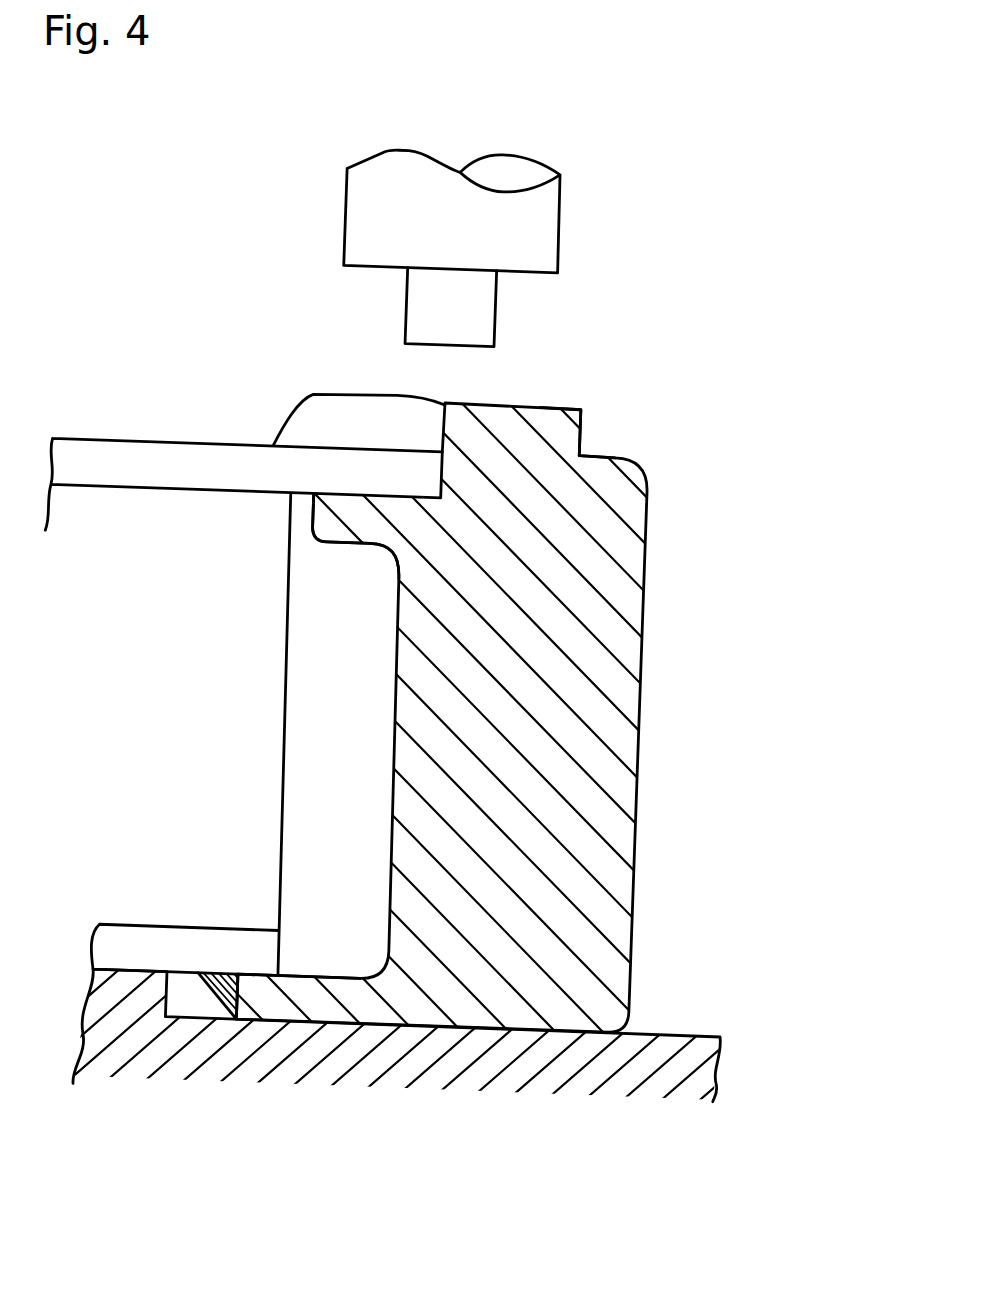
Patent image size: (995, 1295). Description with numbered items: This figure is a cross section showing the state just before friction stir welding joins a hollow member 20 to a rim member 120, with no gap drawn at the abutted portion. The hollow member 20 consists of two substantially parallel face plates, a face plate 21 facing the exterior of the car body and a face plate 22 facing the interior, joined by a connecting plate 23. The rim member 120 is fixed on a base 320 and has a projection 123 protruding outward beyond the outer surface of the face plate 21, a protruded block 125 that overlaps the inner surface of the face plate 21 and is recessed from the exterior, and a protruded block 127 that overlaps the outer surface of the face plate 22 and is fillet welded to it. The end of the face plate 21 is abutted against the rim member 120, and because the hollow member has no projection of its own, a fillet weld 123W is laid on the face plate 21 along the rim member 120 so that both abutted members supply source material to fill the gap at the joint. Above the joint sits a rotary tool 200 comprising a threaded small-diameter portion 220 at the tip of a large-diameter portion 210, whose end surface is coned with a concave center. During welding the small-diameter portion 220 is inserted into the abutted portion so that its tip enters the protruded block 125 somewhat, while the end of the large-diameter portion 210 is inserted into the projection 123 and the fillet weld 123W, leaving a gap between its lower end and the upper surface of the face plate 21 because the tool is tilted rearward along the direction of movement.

The hollow member 20 is at (243, 639).
The face plate 21 is at (214, 457).
The face plate 22 is at (160, 942).
The connecting plate 23 is at (195, 681).
The rim member 120 is at (478, 697).
The projection 123 is at (558, 422).
The fillet weld 123W is at (338, 410).
The protruded block 125 is at (326, 521).
The protruded block 127 is at (273, 1003).
The rotary tool 200 is at (499, 191).
The large-diameter portion 210 is at (548, 228).
The small-diameter portion 220 is at (487, 302).
The base 320 is at (457, 1060).